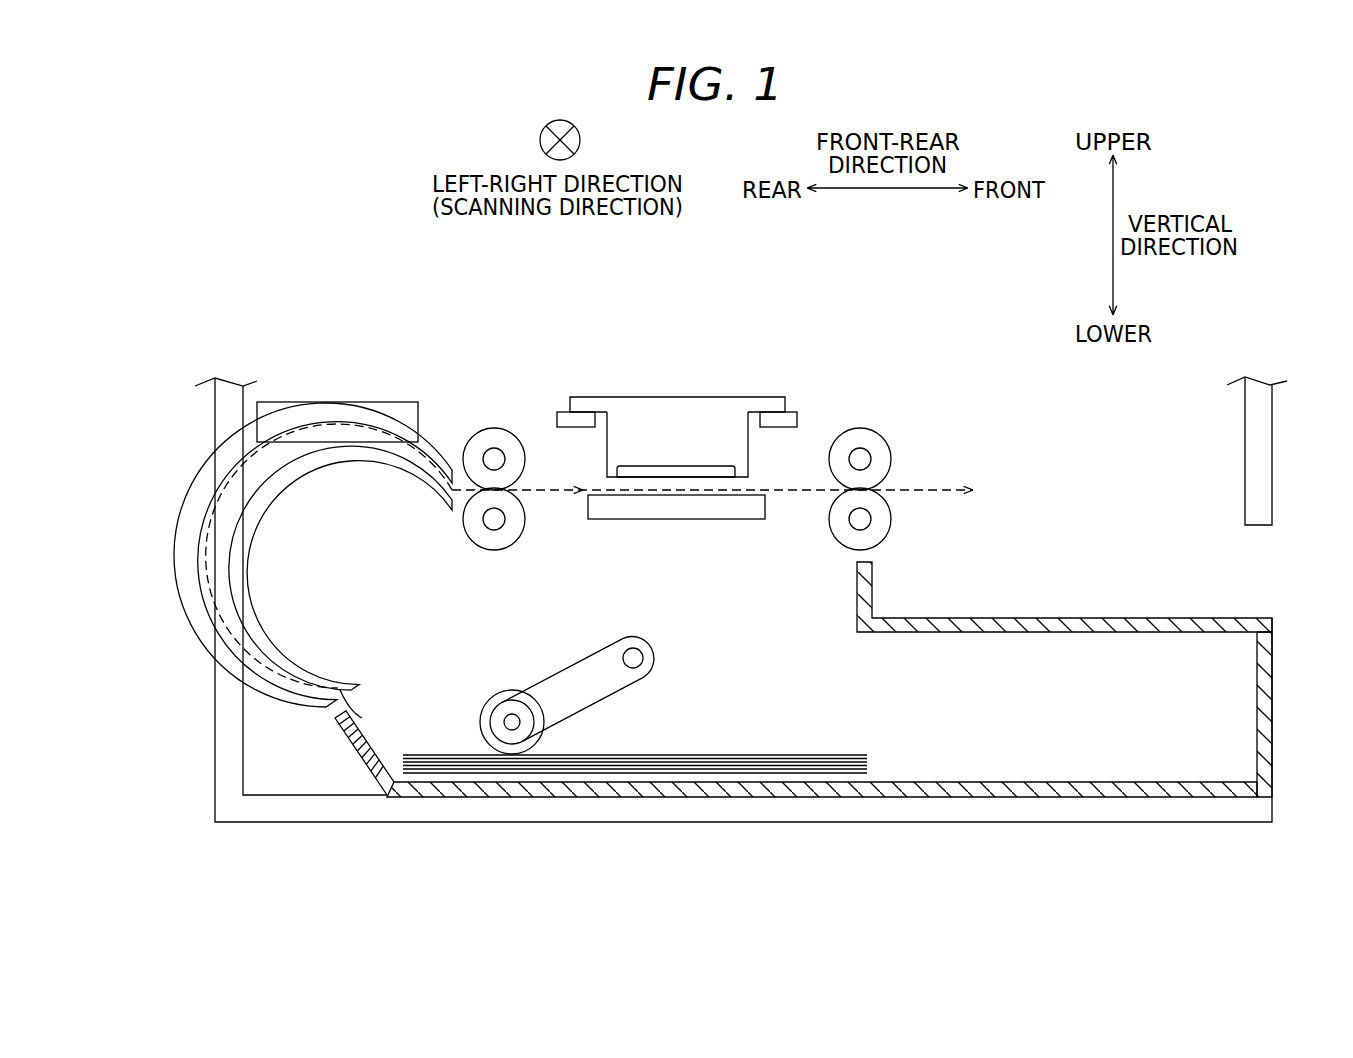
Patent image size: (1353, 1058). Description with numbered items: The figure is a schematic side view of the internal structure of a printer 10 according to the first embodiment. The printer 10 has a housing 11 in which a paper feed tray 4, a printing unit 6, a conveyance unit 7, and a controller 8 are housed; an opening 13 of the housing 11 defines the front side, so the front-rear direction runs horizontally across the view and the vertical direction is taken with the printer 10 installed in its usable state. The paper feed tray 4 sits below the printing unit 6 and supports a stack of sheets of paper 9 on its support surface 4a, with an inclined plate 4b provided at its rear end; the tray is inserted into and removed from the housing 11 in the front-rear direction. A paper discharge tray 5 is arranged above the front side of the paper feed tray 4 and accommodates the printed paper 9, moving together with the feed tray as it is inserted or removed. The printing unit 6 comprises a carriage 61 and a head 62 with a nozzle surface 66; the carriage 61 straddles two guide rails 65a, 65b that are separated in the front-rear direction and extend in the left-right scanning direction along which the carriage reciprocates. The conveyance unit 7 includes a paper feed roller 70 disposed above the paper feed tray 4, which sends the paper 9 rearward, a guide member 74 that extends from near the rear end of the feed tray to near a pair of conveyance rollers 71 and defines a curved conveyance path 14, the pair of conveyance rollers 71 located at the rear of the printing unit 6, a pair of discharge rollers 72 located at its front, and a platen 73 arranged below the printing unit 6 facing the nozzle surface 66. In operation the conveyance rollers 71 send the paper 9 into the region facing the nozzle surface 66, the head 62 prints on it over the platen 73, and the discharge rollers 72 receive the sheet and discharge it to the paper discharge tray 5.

The printer 10 is at (245, 281).
The housing 11 is at (215, 658).
The controller 8 is at (353, 402).
The conveyance path 14 is at (354, 519).
The guide member 74 is at (305, 580).
The pair of conveyance rollers 71 is at (458, 418).
The printing unit 6 is at (588, 362).
The carriage 61 is at (744, 408).
The head 62 is at (689, 470).
The nozzle surface 66 is at (660, 482).
The guide rail 65a is at (562, 411).
The guide rail 65b is at (795, 410).
The platen 73 is at (633, 520).
The conveyance unit 7 is at (956, 384).
The pair of discharge rollers 72 is at (886, 408).
The opening 13 is at (1258, 525).
The paper discharge tray 5 is at (1066, 617).
The paper feed tray 4 is at (1015, 782).
The support surface 4a is at (924, 774).
The inclined plate 4b is at (363, 757).
The paper 9 is at (858, 752).
The paper feed roller 70 is at (487, 707).